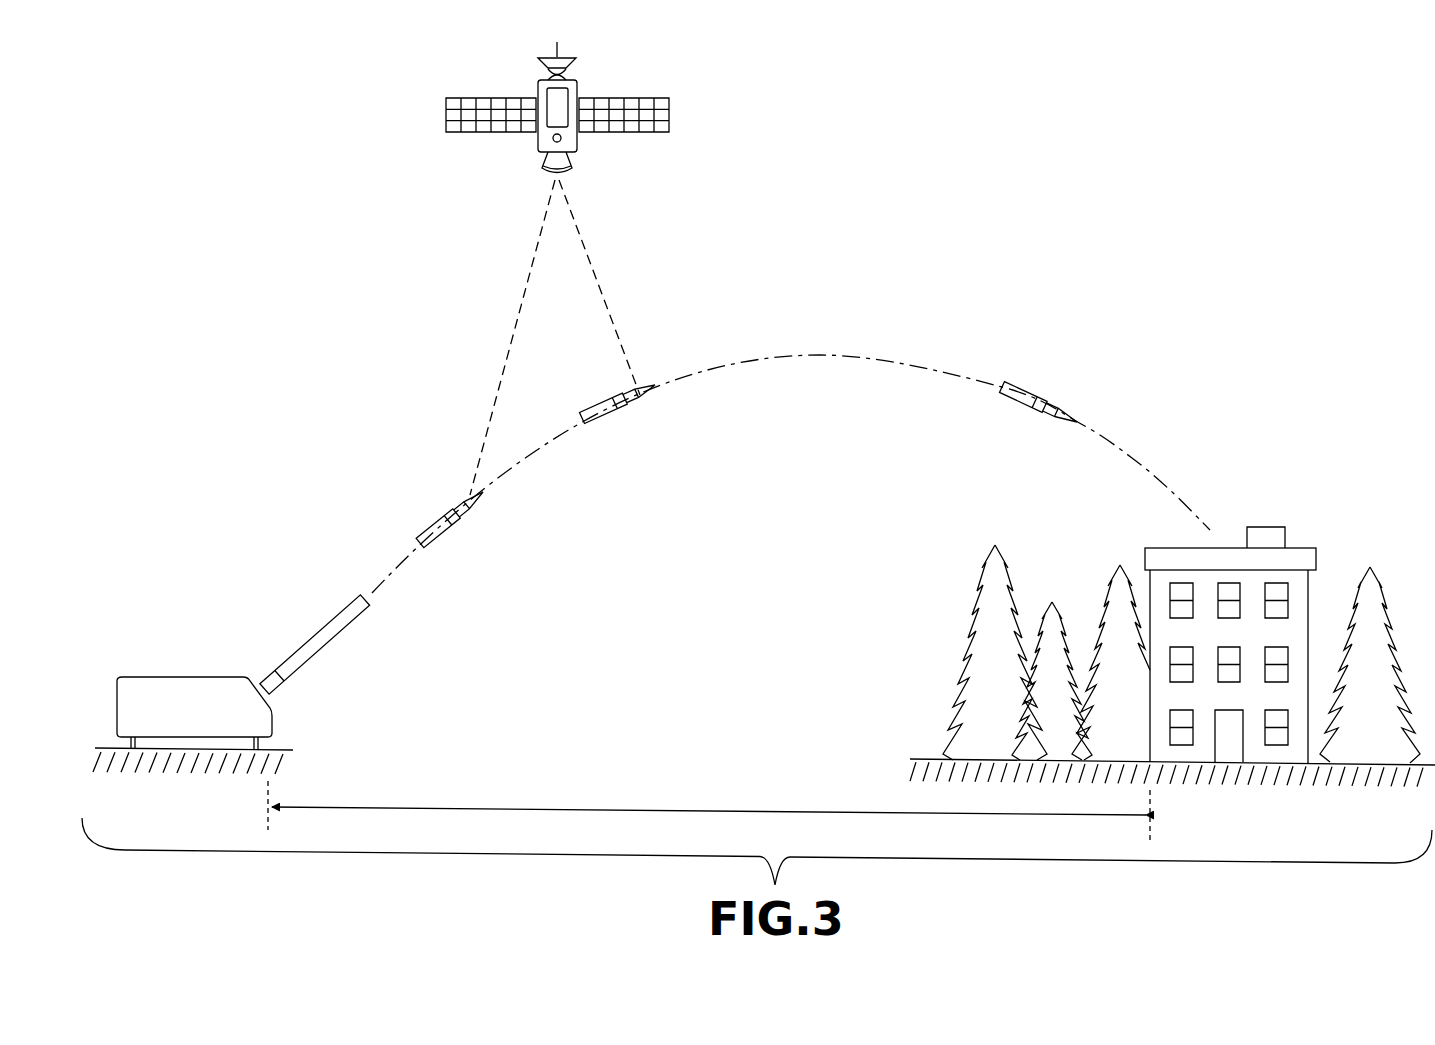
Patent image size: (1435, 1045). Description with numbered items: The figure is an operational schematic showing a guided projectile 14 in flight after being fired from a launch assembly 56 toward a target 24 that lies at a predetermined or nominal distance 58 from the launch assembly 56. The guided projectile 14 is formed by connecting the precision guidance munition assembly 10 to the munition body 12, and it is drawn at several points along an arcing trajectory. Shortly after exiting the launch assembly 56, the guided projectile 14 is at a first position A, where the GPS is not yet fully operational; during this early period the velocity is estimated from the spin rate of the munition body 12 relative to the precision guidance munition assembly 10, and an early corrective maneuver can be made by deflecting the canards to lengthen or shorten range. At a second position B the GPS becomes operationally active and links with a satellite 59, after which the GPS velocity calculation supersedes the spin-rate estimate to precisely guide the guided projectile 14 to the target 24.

The satellite 59 is at (598, 152).
The guided projectile 14 is at (716, 451).
The precision guidance munition assembly 10 is at (648, 400).
The munition body 12 is at (600, 430).
The launch assembly 56 is at (318, 633).
The nominal distance 58 is at (652, 810).
The target 24 is at (1303, 535).